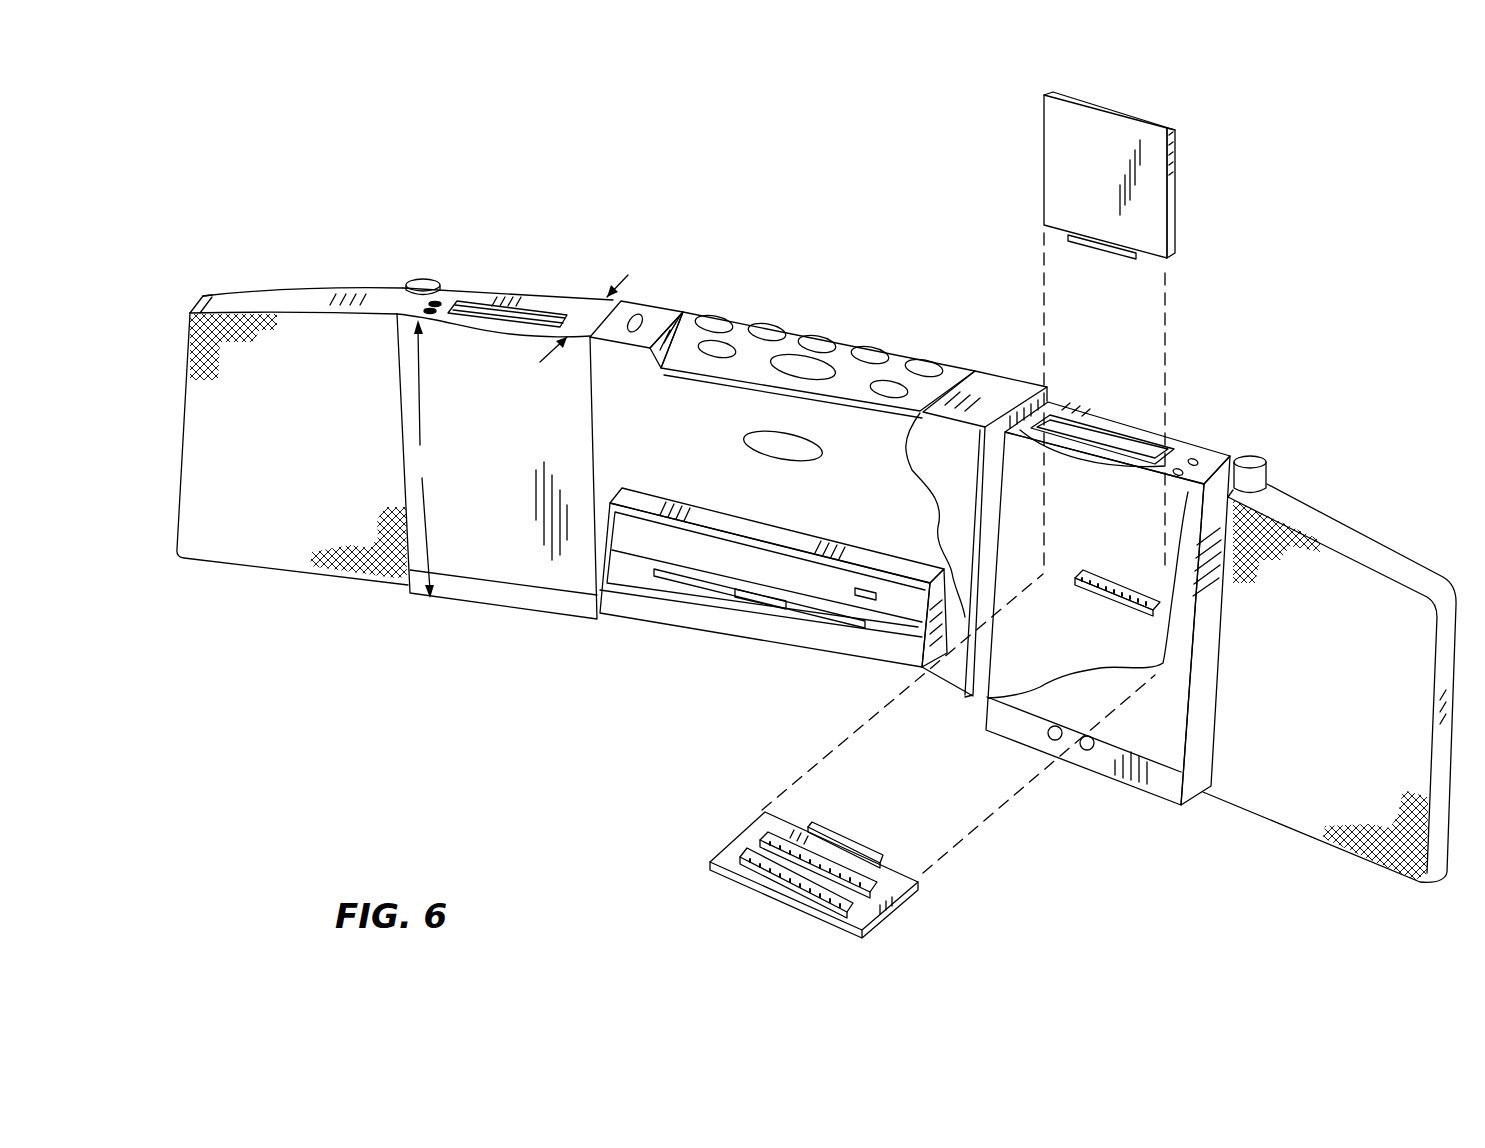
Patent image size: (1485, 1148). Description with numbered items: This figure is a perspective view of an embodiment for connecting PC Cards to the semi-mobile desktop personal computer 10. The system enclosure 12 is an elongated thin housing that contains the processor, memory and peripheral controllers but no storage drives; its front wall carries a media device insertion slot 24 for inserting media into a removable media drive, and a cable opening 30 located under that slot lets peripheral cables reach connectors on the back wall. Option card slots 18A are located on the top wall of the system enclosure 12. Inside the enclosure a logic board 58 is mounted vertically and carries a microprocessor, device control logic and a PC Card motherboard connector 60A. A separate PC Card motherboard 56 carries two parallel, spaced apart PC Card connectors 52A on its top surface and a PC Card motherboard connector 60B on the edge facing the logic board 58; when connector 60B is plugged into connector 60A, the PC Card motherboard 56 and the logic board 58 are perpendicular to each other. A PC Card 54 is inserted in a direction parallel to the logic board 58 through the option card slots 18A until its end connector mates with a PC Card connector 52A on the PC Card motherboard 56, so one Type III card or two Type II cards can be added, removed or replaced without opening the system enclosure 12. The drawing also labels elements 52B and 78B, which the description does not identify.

The semi-mobile desktop personal computer 10 is at (1342, 166).
The system enclosure 12 is at (527, 618).
The option card slots 18A is at (503, 308).
The media device insertion slot 24 is at (713, 600).
The cable opening 30 is at (512, 450).
The PC Card connector 52A is at (742, 857).
The connector 52B is at (1100, 248).
The PC Card 54 is at (1177, 200).
The PC Card motherboard 56 is at (897, 903).
The logic board 58 is at (970, 422).
The PC Card motherboard connector 60A is at (1152, 588).
The PC Card motherboard connector 60B is at (870, 850).
The slot 78B is at (1132, 441).